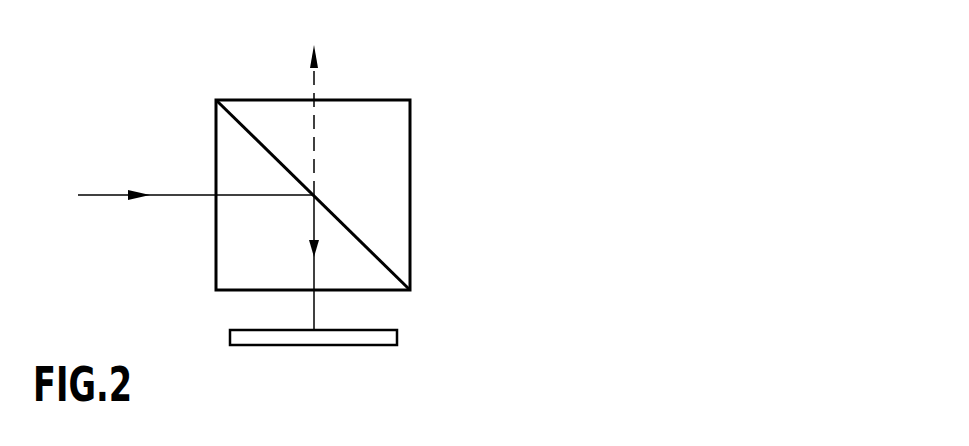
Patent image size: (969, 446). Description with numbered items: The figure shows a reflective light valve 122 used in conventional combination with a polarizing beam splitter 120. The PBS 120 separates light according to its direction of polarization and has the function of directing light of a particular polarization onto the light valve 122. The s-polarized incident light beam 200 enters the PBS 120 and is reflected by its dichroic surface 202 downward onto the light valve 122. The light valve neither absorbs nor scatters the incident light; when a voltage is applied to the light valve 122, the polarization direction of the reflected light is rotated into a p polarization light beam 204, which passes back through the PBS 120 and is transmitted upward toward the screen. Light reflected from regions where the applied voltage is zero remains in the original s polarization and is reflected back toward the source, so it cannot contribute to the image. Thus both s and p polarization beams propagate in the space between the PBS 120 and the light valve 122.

The polarizing beam splitter 120 is at (410, 165).
The reflective light valve 122 is at (340, 345).
The incident light beam 200 is at (167, 197).
The dichroic surface 202 is at (330, 208).
The p polarization light beam 204 is at (314, 93).